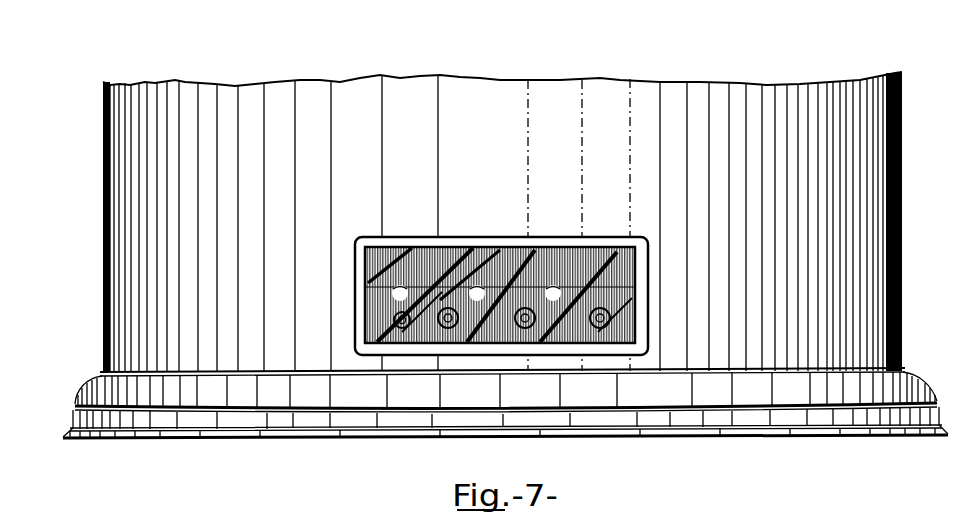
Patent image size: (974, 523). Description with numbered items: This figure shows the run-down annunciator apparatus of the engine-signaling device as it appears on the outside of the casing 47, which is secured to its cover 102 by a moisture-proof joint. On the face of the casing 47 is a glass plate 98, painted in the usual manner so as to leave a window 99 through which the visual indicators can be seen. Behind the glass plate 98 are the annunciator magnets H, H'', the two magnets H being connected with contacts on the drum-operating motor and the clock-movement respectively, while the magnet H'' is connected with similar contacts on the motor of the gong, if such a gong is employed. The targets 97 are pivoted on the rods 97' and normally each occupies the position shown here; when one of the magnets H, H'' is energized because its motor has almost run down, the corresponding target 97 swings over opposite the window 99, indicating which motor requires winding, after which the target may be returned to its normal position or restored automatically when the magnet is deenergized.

The casing 47 is at (104, 252).
The cover 102 is at (921, 388).
The glass plate 98 is at (390, 262).
The window 99 is at (428, 250).
The rods 97' is at (477, 253).
The targets 97 is at (511, 274).
The annunciator magnet H'' is at (421, 353).
The annunciator magnets H is at (524, 351).